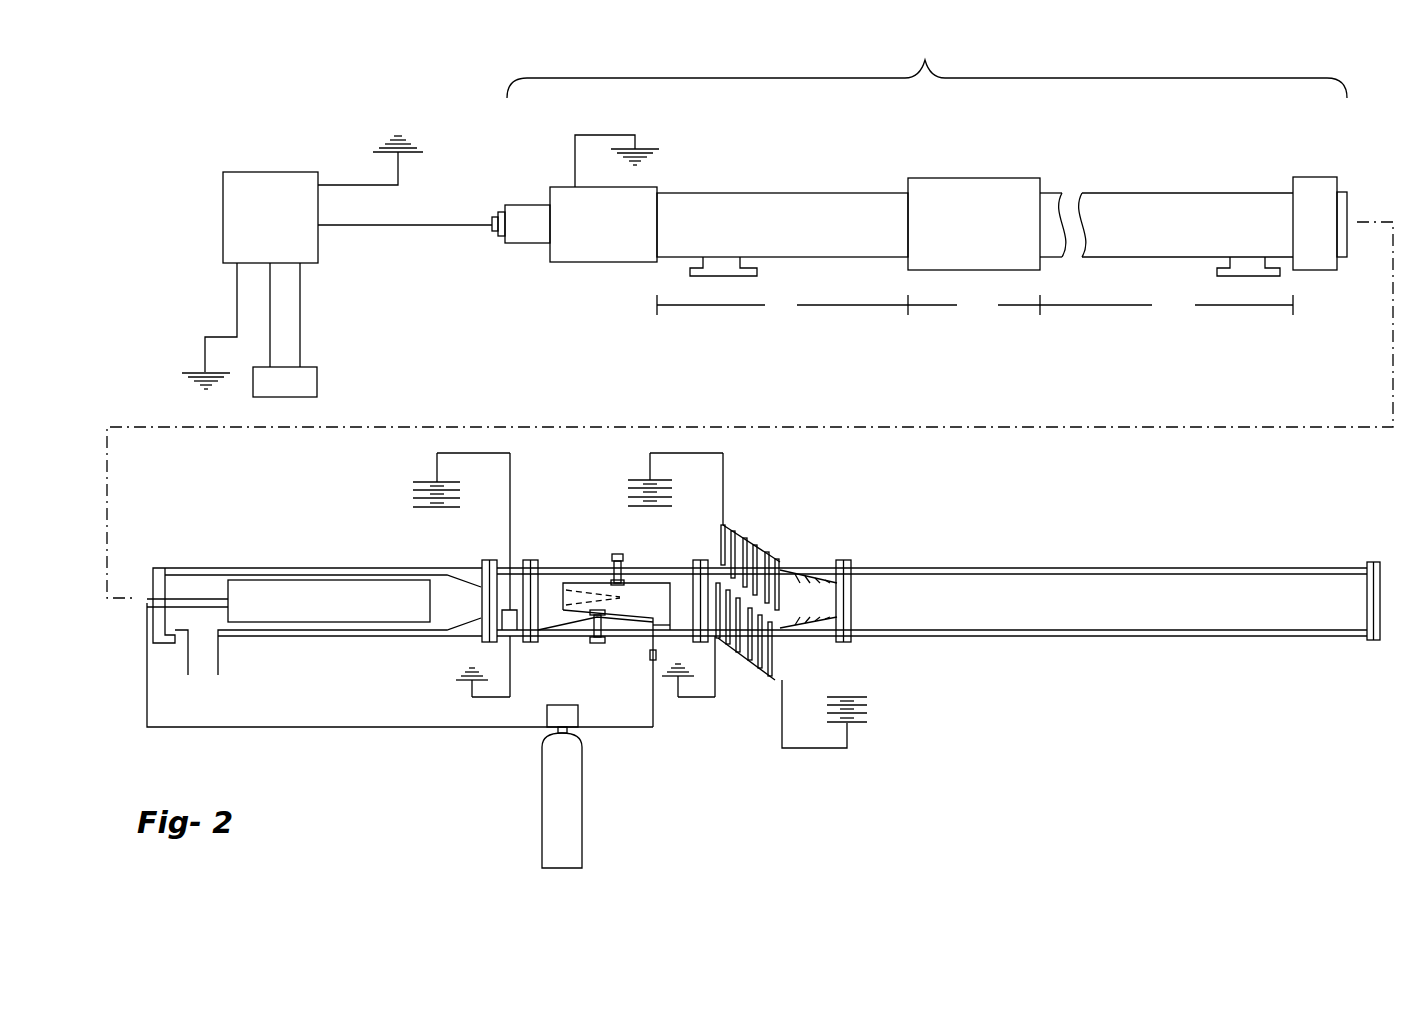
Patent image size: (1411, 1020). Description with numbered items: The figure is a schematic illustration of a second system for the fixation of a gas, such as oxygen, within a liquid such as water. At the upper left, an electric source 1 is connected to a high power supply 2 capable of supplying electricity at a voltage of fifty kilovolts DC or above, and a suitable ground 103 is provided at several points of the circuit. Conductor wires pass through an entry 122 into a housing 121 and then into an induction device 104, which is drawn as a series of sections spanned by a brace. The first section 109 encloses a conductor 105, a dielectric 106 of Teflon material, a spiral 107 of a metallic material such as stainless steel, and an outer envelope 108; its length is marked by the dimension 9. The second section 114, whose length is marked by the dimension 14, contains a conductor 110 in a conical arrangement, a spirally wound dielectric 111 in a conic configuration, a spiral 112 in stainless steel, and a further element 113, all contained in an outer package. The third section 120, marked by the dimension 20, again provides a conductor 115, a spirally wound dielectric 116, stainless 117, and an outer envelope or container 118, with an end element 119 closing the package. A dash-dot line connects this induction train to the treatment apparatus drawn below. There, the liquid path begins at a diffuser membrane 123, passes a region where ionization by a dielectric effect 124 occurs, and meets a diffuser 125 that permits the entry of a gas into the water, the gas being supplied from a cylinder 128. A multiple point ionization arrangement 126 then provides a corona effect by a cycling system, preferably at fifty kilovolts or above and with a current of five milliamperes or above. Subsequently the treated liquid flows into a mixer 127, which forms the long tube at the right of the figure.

The battery 1 is at (317, 378).
The high voltage power supply 2 is at (286, 183).
The length of first section 9 is at (782, 306).
The length of second section 14 is at (974, 306).
The length of third section 20 is at (1166, 306).
The ground 103 is at (387, 138).
The induction device 104 is at (927, 63).
The conductor 105 is at (723, 242).
The dielectric 106 is at (775, 242).
The spiral 107 is at (826, 242).
The outer envelope 108 is at (878, 242).
The first section 109 is at (786, 184).
The conductor 110 is at (962, 224).
The spirally wound dielectric 111 is at (1010, 224).
The spiral 112 is at (962, 257).
The electrode 113 is at (1010, 257).
The second section 114 is at (1036, 168).
The conductor 115 is at (1135, 243).
The spirally wound dielectric 116 is at (1183, 243).
The stainless 117 is at (1231, 243).
The outer envelope 118 is at (1279, 243).
The end electrode 119 is at (1330, 243).
The third section 120 is at (1206, 183).
The ion source housing 121 is at (627, 238).
The entry 122 is at (528, 232).
The diffuser membrane 123 is at (345, 570).
The ionization by a dielectric effect 124 is at (512, 474).
The diffuser 125 is at (615, 553).
The multiple point ionization arrangement 126 is at (760, 550).
The mixer 127 is at (1175, 566).
The gas cylinder 128 is at (560, 795).